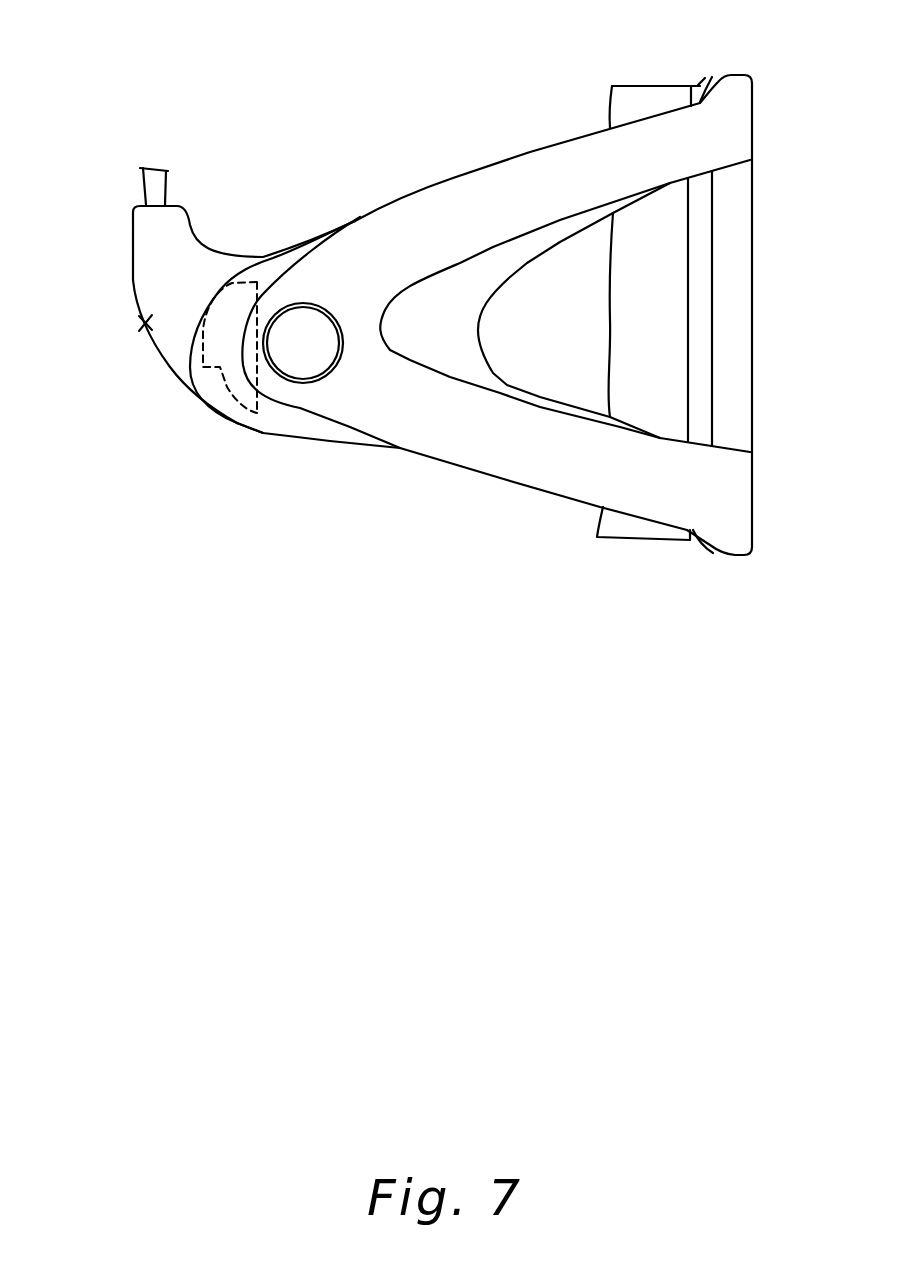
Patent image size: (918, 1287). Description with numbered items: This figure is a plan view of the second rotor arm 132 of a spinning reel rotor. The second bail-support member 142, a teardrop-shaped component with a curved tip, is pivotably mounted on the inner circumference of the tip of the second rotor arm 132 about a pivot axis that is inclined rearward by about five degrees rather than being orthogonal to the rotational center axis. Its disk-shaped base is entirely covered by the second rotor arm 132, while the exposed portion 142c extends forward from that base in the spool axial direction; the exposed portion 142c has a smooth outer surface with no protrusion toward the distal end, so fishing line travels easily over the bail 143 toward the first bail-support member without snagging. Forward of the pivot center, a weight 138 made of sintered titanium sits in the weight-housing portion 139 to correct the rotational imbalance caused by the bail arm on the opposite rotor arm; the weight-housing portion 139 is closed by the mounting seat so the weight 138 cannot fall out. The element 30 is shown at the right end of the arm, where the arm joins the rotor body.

The frame 30 is at (640, 100).
The second rotor arm 132 is at (453, 178).
The weight 138 is at (252, 417).
The weight-housing portion 139 is at (212, 410).
The second bail-support member 142 is at (145, 266).
The exposed portion 142c is at (106, 335).
The bail 143 is at (165, 188).